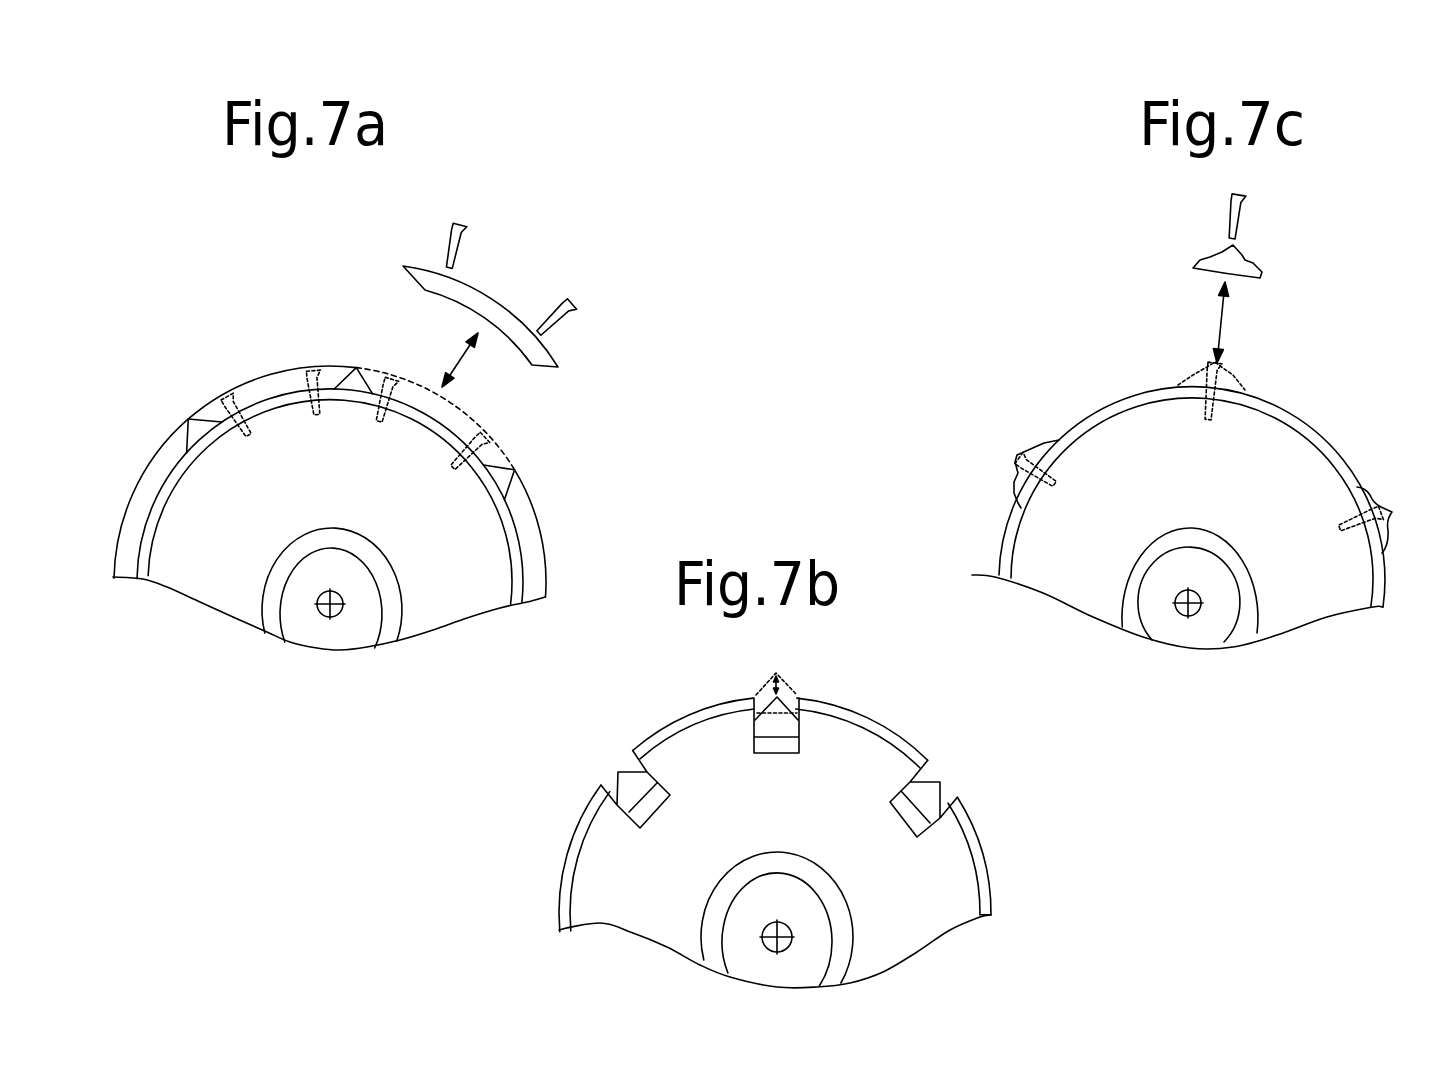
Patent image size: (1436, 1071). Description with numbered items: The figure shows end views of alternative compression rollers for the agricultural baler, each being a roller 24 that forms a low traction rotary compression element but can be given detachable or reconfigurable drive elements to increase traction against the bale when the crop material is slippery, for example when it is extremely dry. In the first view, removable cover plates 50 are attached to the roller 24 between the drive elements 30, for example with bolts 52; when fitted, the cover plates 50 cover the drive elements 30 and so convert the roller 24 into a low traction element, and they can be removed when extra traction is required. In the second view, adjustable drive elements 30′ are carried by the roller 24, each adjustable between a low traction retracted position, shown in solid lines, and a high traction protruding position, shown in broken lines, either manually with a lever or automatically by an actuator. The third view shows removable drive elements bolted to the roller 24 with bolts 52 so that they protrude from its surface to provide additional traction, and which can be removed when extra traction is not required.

In FIG. 7A, the roller 24 is at (435, 602).
In FIG. 7B, the roller 24 is at (902, 930).
In FIG. 7C, the roller 24 is at (1075, 580).
In FIG. 7A, the drive elements 30 is at (345, 378).
In FIG. 7B, the adjustable drive elements 30′ is at (786, 709).
In FIG. 7A, the cover plates 50 is at (246, 392).
In FIG. 7A, the bolts 52 is at (565, 318).
In FIG. 7C, the bolts 52 is at (1240, 219).